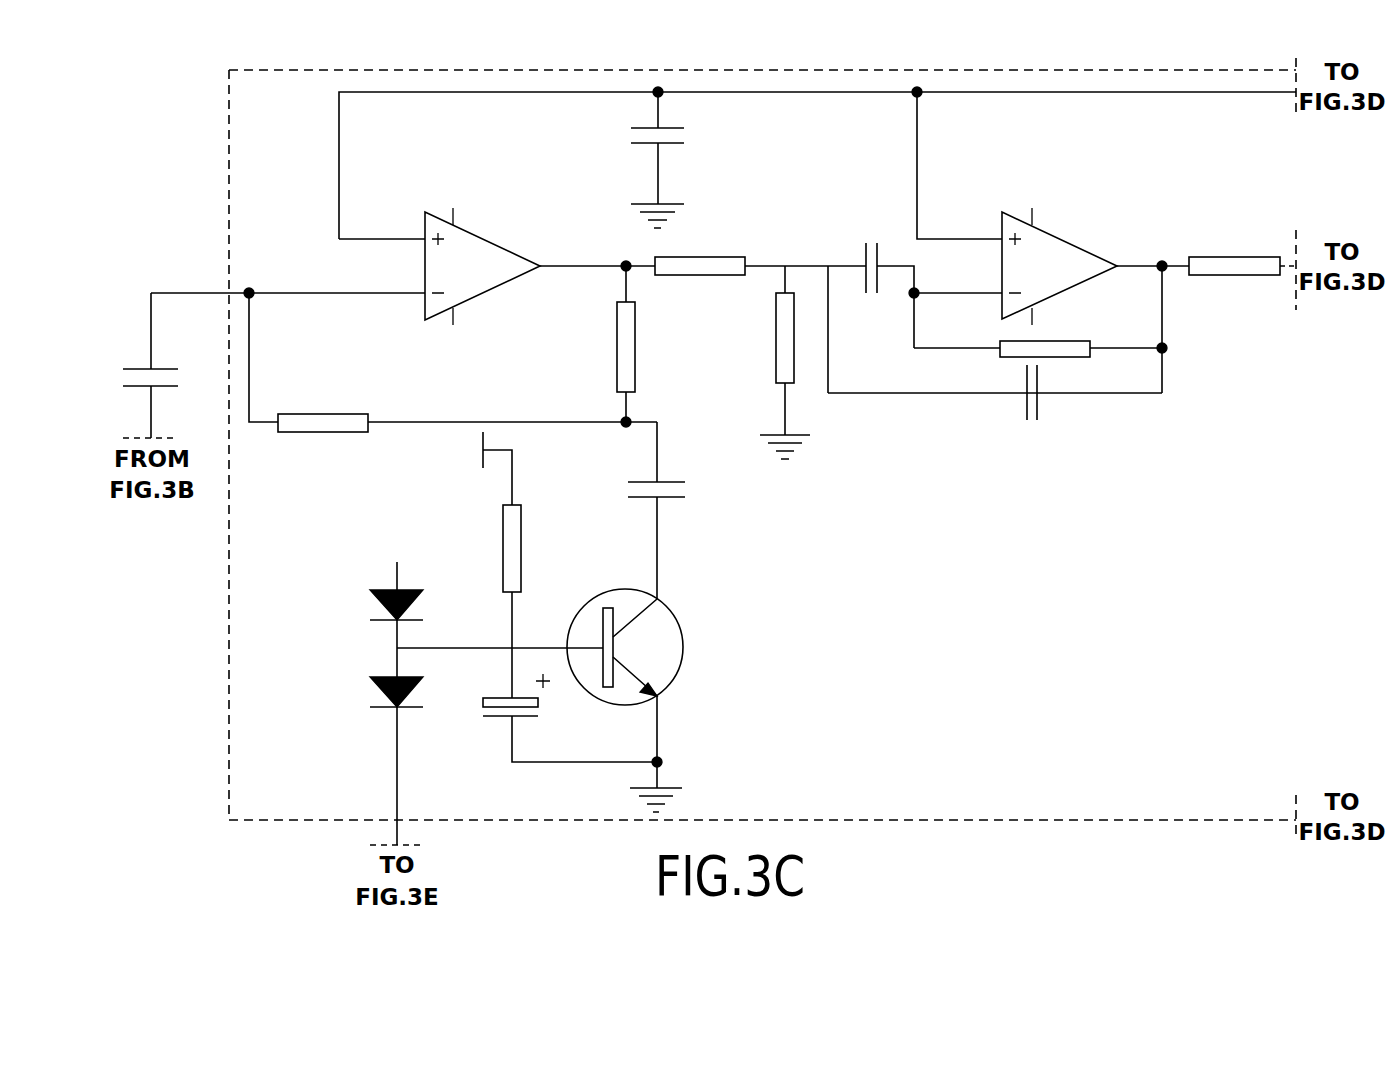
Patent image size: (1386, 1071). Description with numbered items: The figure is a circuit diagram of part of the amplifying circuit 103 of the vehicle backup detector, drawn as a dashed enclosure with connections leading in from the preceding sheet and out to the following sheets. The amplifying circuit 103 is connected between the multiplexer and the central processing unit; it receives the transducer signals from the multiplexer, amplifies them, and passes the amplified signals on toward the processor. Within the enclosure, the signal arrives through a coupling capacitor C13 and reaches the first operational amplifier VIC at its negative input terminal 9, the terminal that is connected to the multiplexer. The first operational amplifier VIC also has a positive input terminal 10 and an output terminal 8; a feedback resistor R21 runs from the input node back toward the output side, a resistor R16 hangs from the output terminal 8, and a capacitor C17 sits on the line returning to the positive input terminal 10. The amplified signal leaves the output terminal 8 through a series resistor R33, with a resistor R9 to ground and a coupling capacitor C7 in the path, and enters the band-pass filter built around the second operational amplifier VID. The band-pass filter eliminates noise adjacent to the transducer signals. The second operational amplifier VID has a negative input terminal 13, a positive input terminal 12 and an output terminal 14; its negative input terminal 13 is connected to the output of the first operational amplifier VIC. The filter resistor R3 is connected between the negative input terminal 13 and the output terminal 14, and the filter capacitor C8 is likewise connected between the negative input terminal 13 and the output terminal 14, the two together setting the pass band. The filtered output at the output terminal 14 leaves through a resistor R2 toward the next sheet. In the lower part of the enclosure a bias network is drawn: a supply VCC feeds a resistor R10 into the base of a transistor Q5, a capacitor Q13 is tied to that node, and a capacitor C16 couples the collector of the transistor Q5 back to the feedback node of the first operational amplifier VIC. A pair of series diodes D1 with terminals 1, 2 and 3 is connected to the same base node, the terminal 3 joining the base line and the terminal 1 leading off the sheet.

The amplifying circuit 103 is at (229, 697).
The first operational amplifier VIC is at (482, 266).
The second operational amplifier VID is at (1014, 206).
The capacitor C13 is at (166, 363).
The capacitor C17 is at (668, 157).
The capacitor C16 is at (680, 510).
The capacitor C7 is at (871, 315).
The filter capacitor C8 is at (995, 395).
The resistor R33 is at (760, 280).
The resistor R16 is at (650, 344).
The resistor R9 is at (775, 362).
The resistor R21 is at (453, 362).
The resistor R10 is at (538, 601).
The resistor R2 is at (1242, 250).
The filter resistor R3 is at (1040, 329).
The transistor Q5 is at (640, 700).
The capacitor Q13 is at (550, 718).
The diode pair D1 is at (370, 703).
The supply voltage VCC is at (468, 468).
The output terminal 8 is at (597, 254).
The negative input terminal 9 is at (337, 279).
The positive input terminal 10 is at (369, 224).
The positive input terminal 12 is at (964, 224).
The negative input terminal 13 is at (955, 281).
The output terminal 14 is at (1153, 254).
The pin 1 of D1 1 is at (378, 761).
The pin 2 of D1 2 is at (378, 546).
The pin 3 of D1 3 is at (500, 633).